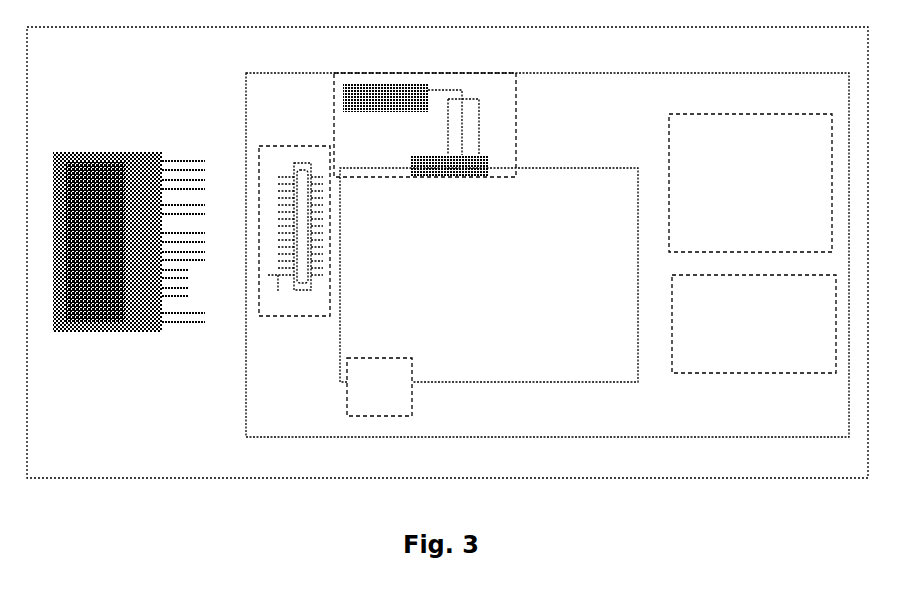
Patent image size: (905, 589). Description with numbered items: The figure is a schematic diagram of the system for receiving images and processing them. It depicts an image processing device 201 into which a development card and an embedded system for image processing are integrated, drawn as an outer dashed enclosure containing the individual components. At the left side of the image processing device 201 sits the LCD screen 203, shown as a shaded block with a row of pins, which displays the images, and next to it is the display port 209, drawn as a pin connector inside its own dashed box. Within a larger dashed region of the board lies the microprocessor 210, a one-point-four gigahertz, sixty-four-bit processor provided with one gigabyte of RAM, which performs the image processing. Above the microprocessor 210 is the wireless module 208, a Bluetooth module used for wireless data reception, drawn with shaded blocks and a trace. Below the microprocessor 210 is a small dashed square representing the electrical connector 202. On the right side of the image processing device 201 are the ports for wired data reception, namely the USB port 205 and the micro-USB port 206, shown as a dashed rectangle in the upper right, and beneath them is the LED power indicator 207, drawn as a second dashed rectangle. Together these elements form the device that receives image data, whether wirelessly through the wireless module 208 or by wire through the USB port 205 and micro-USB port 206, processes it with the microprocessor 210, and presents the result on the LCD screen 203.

The image processing device 201 is at (145, 480).
The electrical connector 202 is at (355, 398).
The LCD screen 203 is at (94, 160).
The USB port 205 is at (707, 135).
The micro-USB port 206 is at (752, 125).
The LED power indicator 207 is at (767, 355).
The wireless module 208 is at (485, 88).
The display port 209 is at (272, 160).
The microprocessor 210 is at (563, 368).